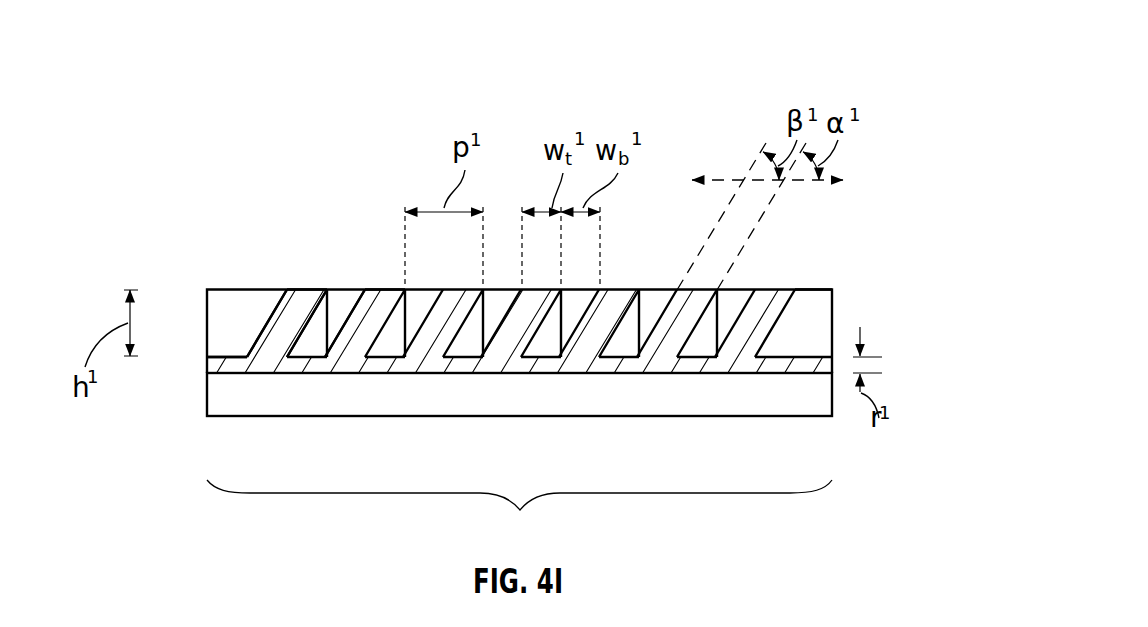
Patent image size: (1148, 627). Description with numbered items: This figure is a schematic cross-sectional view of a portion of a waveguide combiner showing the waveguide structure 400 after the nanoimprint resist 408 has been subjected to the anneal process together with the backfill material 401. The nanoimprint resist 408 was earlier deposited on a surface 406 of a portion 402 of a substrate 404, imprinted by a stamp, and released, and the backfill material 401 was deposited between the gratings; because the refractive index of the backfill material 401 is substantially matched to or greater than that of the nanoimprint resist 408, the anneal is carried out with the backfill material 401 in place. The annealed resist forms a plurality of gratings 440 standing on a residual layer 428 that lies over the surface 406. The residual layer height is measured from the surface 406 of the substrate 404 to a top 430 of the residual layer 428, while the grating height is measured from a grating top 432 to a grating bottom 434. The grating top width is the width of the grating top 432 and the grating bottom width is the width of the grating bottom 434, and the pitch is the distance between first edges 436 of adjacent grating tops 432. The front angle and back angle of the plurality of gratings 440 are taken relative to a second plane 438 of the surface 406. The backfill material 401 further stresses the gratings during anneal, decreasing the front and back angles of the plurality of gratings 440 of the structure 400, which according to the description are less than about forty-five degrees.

The waveguide structure 400 is at (845, 56).
The backfill material 401 is at (820, 290).
The portion of the substrate 402 is at (519, 513).
The substrate 404 is at (326, 383).
The surface of the substrate 406 is at (221, 370).
The nanoimprint resist 408 is at (236, 355).
The residual layer 428 is at (692, 363).
The top of the residual layer 430 is at (796, 353).
The grating top 432 is at (307, 290).
The grating bottom 434 is at (268, 351).
The first edges of the grating top 436 is at (403, 289).
The second plane 438 is at (816, 184).
The plurality of gratings 440 is at (368, 325).